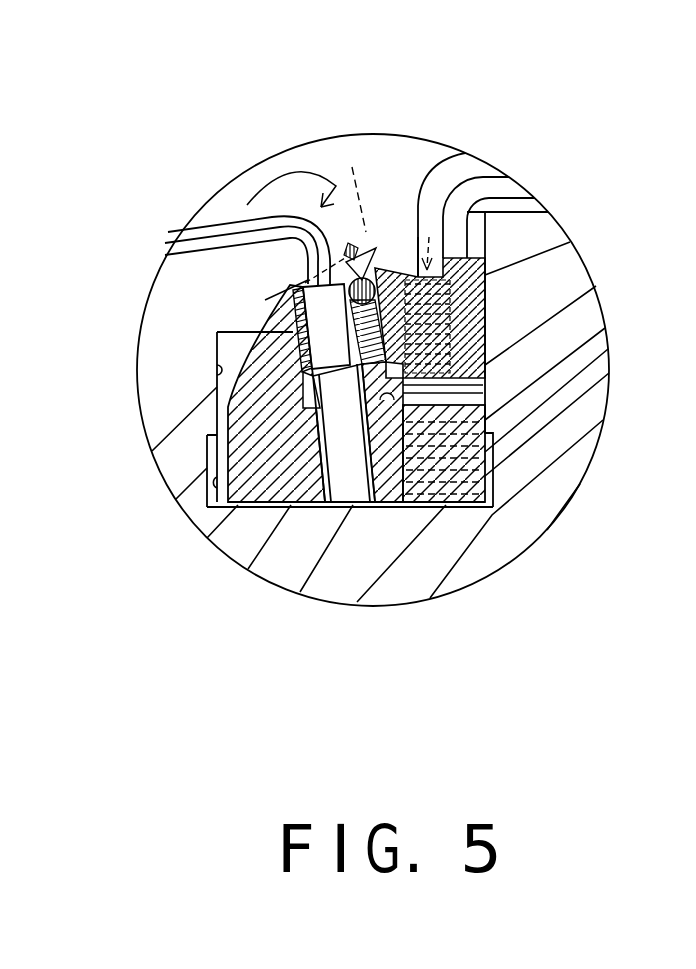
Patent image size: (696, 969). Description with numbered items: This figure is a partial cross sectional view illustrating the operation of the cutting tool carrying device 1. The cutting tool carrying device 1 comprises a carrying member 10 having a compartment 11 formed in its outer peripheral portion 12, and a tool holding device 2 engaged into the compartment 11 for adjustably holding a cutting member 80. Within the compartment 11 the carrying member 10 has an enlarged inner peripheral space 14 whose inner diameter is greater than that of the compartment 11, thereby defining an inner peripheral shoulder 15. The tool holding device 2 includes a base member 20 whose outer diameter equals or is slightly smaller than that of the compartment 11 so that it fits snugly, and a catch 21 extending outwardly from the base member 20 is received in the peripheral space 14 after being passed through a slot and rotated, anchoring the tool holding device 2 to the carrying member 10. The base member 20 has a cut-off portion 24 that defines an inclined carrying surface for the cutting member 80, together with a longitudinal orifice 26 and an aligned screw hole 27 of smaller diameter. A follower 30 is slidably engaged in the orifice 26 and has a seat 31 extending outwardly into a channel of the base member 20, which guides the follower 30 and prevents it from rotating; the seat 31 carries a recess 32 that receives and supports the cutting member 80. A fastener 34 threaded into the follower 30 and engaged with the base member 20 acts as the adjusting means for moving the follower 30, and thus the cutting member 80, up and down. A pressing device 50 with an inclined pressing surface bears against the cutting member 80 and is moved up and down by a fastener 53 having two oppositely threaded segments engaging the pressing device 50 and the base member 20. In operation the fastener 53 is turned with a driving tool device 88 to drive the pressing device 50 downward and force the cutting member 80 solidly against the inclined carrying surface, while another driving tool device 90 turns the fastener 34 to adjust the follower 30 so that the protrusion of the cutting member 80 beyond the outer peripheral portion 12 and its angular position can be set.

The cutting tool carrying device 1 is at (513, 177).
The tool holding device 2 is at (230, 284).
The carrying member 10 is at (511, 547).
The compartment 11 is at (295, 375).
The outer peripheral portion 12 is at (153, 382).
The inner peripheral space 14 is at (215, 485).
The inner peripheral shoulder 15 is at (485, 398).
The base member 20 is at (245, 461).
The catch 21 is at (492, 468).
The cut-off portion 24 is at (385, 470).
The orifice 26 is at (323, 388).
The screw hole 27 is at (348, 470).
The follower 30 is at (298, 293).
The seat 31 is at (312, 417).
The recess 32 is at (418, 207).
The fastener 34 is at (340, 440).
The pressing device 50 is at (485, 252).
The fastener 53 is at (485, 327).
The cutting member 80 is at (369, 262).
The driving tool device 88 is at (470, 190).
The driving tool device 90 is at (243, 303).